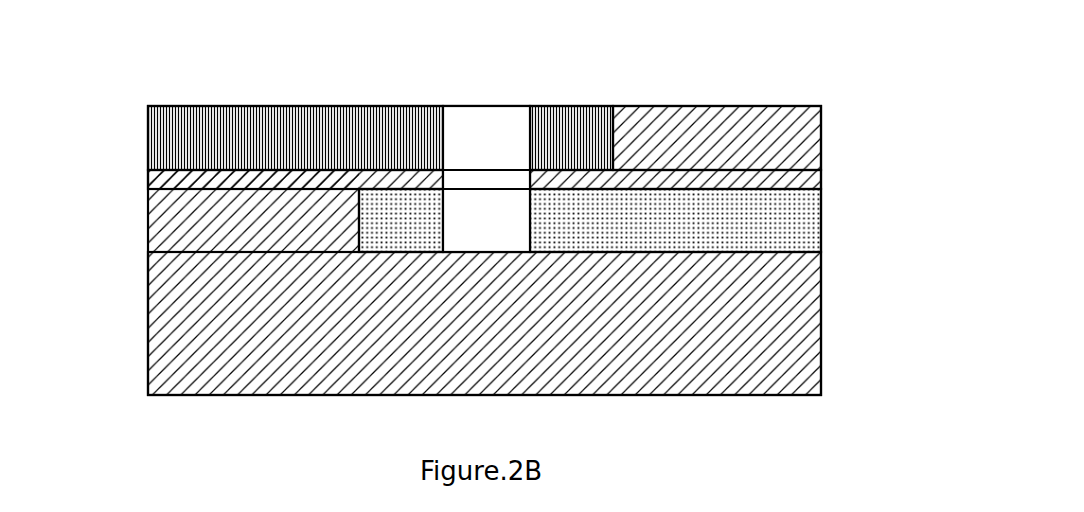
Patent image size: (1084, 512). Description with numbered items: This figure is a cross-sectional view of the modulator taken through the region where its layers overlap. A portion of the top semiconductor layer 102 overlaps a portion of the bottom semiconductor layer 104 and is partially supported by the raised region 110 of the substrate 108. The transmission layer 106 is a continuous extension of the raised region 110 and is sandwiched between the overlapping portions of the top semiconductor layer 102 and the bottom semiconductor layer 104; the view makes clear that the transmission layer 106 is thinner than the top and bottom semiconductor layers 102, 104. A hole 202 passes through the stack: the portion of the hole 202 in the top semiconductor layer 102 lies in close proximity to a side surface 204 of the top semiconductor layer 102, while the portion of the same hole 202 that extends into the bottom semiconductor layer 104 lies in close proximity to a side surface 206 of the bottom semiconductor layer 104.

The top semiconductor layer 102 is at (168, 131).
The bottom semiconductor layer 104 is at (803, 223).
The transmission layer 106 is at (548, 178).
The substrate 108 is at (803, 353).
The raised region 110 is at (220, 212).
The hole 202 is at (481, 80).
The side surface 204 is at (622, 126).
The side surface 206 is at (357, 208).